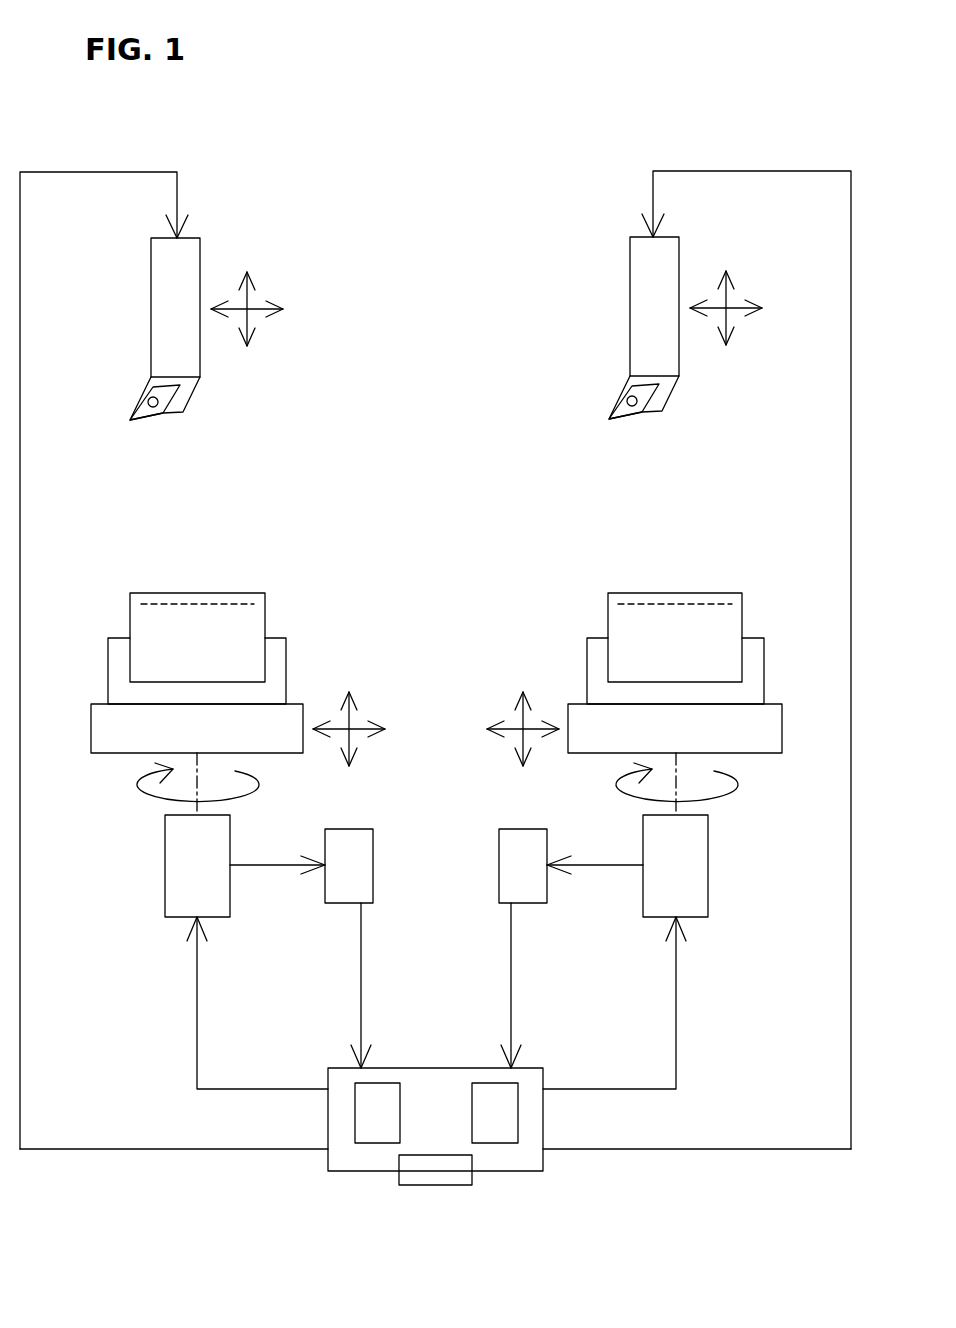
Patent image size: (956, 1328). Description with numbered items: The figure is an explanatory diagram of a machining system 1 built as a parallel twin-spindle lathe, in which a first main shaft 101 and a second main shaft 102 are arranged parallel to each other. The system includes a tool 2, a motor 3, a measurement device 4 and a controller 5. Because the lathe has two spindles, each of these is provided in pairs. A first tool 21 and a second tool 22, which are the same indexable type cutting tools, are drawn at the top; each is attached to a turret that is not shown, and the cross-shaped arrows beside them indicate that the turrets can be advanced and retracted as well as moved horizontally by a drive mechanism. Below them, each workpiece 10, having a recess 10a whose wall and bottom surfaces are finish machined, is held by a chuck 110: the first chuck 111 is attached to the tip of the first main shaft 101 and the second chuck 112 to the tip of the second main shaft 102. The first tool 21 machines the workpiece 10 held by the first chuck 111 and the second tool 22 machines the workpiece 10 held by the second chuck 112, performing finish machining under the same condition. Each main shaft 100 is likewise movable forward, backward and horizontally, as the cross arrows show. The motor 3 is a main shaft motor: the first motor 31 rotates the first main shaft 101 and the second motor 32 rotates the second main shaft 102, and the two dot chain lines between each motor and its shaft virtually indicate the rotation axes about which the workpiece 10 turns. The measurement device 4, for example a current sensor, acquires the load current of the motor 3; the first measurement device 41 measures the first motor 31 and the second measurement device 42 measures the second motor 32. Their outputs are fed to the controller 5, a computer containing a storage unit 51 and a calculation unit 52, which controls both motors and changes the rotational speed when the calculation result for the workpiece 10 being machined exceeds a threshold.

The machining system 1 is at (78, 160).
The tool 2 is at (410, 328).
The first tool 21 is at (166, 313).
The second tool 22 is at (644, 313).
The workpiece 10 is at (152, 630).
The recess 10a is at (162, 583).
The chuck 110 is at (436, 648).
The first chuck 111 is at (277, 680).
The second chuck 112 is at (597, 680).
The main shaft 100 is at (436, 765).
The first main shaft 101 is at (130, 742).
The second main shaft 102 is at (742, 740).
The motor 3 is at (436, 866).
The first motor 31 is at (183, 876).
The second motor 32 is at (690, 875).
The measurement device 4 is at (435, 908).
The first measurement device 41 is at (340, 888).
The second measurement device 42 is at (533, 888).
The controller 5 is at (407, 1177).
The storage unit 51 is at (364, 1111).
The calculation unit 52 is at (507, 1112).